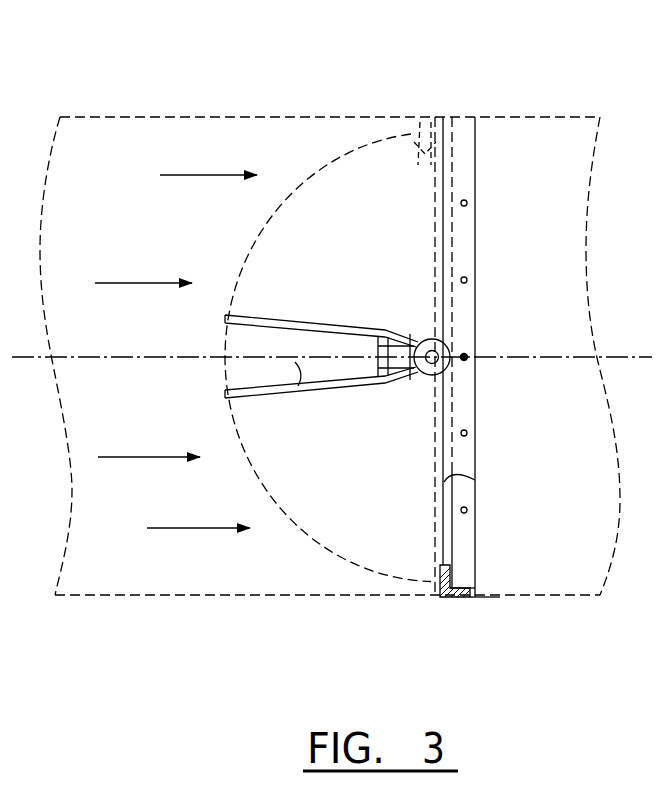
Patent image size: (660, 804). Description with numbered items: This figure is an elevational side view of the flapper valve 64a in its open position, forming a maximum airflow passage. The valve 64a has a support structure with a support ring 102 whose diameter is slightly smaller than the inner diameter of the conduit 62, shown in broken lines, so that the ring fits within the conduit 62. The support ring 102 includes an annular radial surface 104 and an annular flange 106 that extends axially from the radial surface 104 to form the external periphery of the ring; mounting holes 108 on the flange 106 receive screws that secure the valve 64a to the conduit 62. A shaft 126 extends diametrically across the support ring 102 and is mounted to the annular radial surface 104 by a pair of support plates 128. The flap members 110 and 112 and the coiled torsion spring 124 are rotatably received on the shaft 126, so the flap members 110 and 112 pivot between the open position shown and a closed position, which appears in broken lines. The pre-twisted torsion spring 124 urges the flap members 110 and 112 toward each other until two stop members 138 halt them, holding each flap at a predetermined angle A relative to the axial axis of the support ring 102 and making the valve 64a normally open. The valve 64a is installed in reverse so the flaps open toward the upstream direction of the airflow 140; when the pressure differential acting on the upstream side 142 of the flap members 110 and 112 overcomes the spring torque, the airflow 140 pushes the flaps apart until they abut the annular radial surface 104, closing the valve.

The conduit 62 is at (229, 116).
The flapper valve 64a is at (403, 92).
The support ring 102 is at (476, 174).
The annular radial surface 104 is at (437, 598).
The annular flange 106 is at (476, 591).
The mounting holes 108 is at (468, 511).
The flap member 110 is at (420, 122).
The flap member 112 is at (238, 393).
The coiled torsion spring 124 is at (376, 336).
The shaft 126 is at (424, 382).
The support plates 128 is at (420, 336).
The stop members 138 is at (382, 385).
The airflow 140 is at (143, 283).
The upstream side 142 is at (236, 366).
The predetermined angle A is at (281, 372).